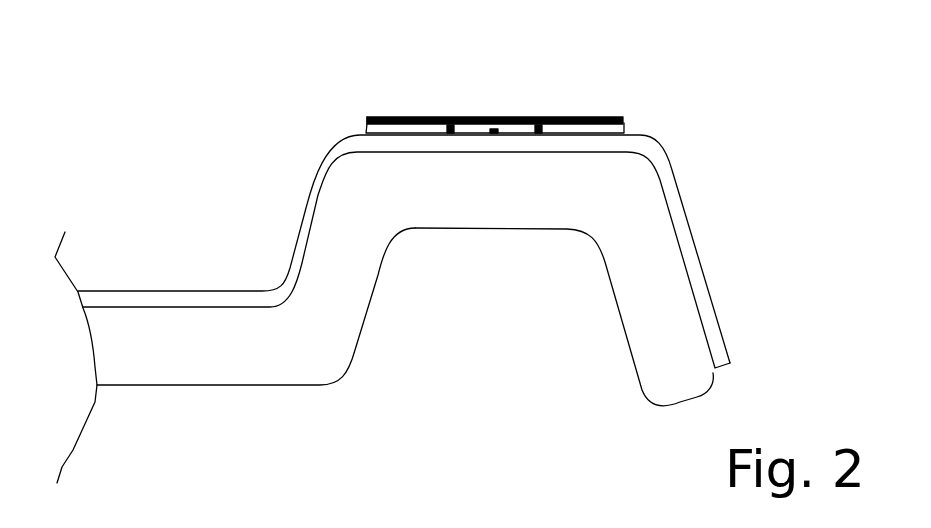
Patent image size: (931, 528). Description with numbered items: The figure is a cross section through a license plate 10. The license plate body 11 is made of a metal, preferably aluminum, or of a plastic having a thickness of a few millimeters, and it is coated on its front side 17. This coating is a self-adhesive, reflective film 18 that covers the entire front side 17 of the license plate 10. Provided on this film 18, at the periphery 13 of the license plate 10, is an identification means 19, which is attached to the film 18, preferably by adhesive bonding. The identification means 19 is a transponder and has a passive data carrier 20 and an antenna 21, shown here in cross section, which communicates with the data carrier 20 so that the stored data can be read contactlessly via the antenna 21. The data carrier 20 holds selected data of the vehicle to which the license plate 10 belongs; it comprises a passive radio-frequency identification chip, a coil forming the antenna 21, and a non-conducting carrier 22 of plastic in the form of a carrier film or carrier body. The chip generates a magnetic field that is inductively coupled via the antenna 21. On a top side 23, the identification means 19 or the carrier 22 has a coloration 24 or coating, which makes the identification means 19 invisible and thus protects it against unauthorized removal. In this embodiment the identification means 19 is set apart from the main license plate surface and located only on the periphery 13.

The license plate 10 is at (215, 146).
The license plate body 11 is at (168, 372).
The periphery 13 is at (460, 187).
The front side 17 is at (112, 307).
The film 18 is at (177, 292).
The identification means 19 is at (497, 82).
The data carrier 20 is at (498, 132).
The antenna 21 is at (450, 126).
The carrier 22 is at (615, 128).
The top side 23 is at (370, 118).
The coloration 24 is at (395, 118).